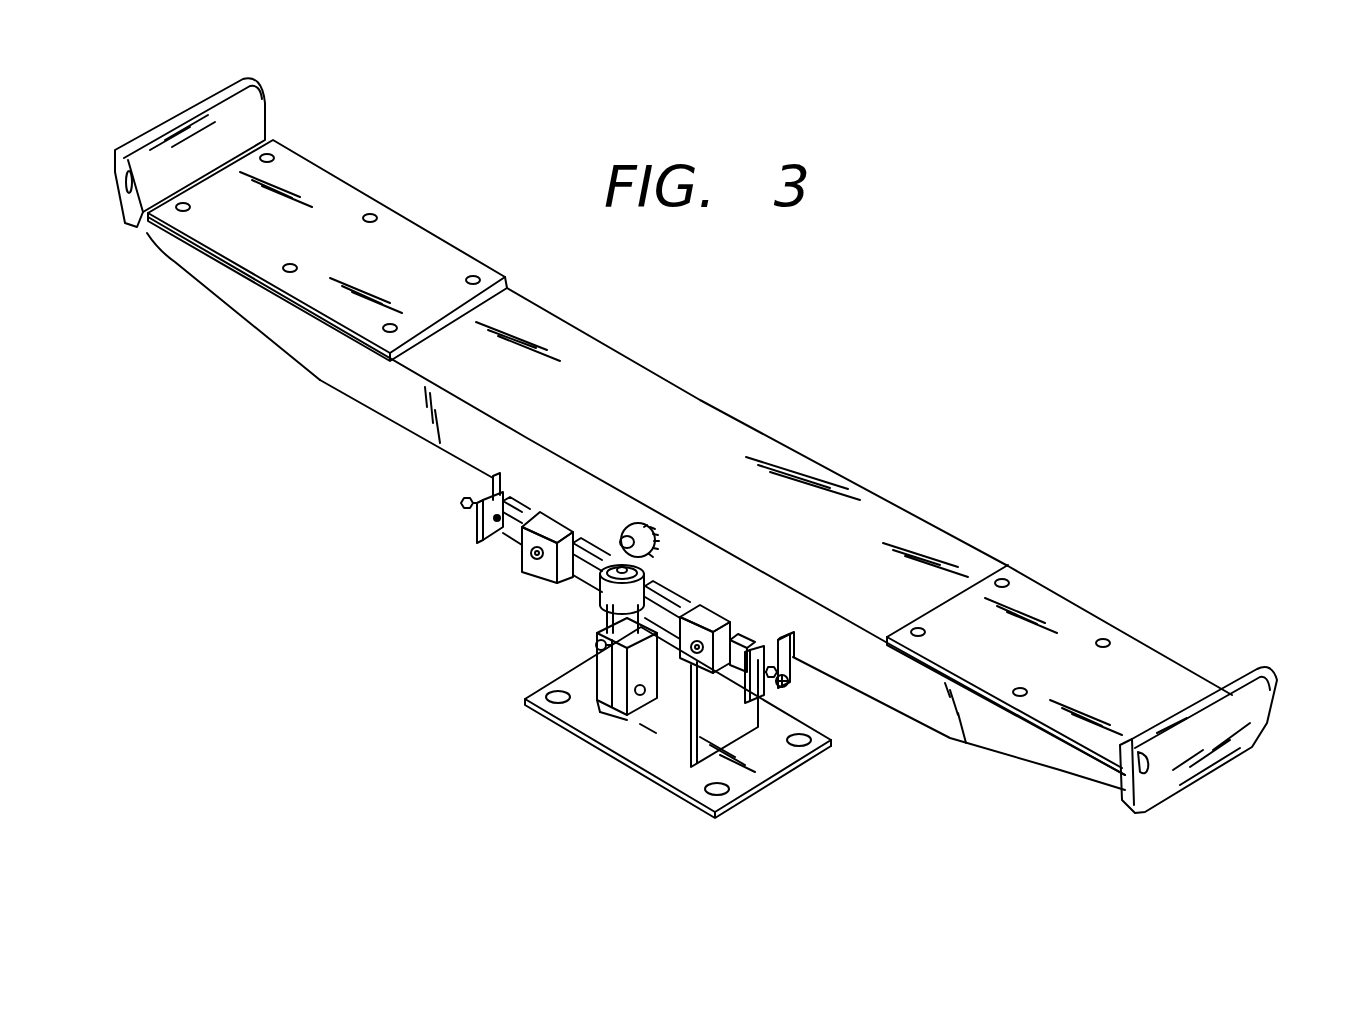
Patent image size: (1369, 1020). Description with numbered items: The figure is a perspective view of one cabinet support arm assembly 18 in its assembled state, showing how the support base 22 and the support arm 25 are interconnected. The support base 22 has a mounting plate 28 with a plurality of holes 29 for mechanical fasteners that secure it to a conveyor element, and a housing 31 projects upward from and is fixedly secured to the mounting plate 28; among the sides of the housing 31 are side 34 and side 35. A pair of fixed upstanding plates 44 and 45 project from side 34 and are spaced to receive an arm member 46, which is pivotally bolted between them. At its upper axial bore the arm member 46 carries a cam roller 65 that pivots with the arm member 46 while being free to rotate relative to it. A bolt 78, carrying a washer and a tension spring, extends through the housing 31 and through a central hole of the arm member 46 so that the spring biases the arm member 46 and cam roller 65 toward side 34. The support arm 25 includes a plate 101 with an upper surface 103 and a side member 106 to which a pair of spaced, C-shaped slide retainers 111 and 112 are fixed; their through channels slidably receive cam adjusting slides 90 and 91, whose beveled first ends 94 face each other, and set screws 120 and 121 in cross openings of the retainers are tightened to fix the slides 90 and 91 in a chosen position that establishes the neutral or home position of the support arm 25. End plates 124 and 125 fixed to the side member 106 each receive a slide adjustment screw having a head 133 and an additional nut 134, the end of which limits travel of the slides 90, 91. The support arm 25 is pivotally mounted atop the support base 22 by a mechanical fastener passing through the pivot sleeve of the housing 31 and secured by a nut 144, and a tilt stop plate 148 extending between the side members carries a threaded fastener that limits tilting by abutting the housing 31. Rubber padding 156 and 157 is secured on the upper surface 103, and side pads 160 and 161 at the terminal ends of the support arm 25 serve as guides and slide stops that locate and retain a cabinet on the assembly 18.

The cabinet support arm assembly 18 is at (862, 333).
The support base 22 is at (523, 713).
The support arm 25 is at (303, 410).
The mounting plate 28 is at (793, 767).
The holes 29 is at (823, 745).
The housing 31 is at (676, 745).
The side 34 is at (648, 728).
The side 35 is at (720, 724).
The upstanding plate 44 is at (597, 670).
The upstanding plate 45 is at (622, 710).
The arm member 46 is at (600, 712).
The cam roller 65 is at (645, 588).
The bolt 78 is at (596, 645).
The cam adjusting slide 90 is at (510, 531).
The cam adjusting slide 91 is at (668, 610).
The first end 94 is at (598, 585).
The plate 101 is at (680, 405).
The upper surface 103 is at (805, 513).
The side member 106 is at (530, 462).
The slide retainer 111 is at (551, 522).
The slide retainer 112 is at (711, 620).
The set screw 120 is at (533, 557).
The set screw 121 is at (695, 652).
The end plate 124 is at (478, 530).
The end plate 125 is at (768, 646).
The head 133 is at (789, 686).
The nut 134 is at (466, 517).
The nut 144 is at (636, 523).
The tilt stop plate 148 is at (787, 677).
The padding 156 is at (345, 207).
The padding 157 is at (1058, 617).
The side pad 160 is at (258, 92).
The side pad 161 is at (1258, 672).